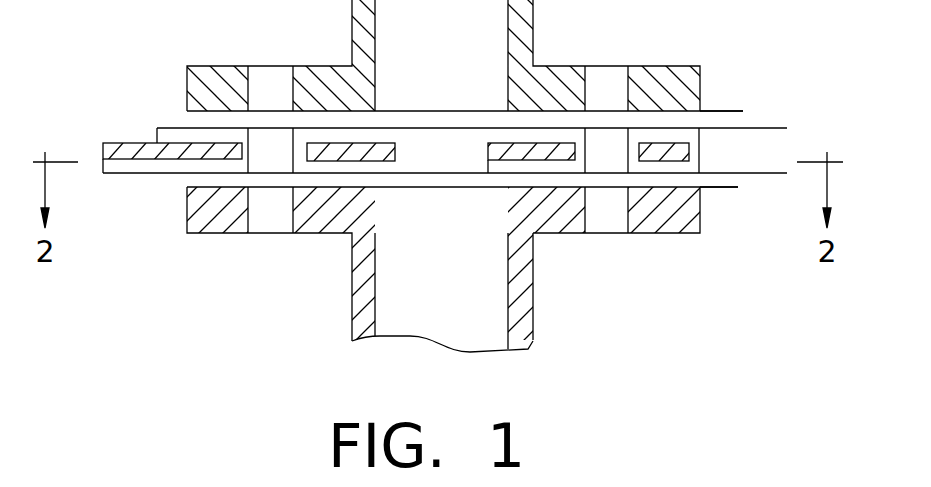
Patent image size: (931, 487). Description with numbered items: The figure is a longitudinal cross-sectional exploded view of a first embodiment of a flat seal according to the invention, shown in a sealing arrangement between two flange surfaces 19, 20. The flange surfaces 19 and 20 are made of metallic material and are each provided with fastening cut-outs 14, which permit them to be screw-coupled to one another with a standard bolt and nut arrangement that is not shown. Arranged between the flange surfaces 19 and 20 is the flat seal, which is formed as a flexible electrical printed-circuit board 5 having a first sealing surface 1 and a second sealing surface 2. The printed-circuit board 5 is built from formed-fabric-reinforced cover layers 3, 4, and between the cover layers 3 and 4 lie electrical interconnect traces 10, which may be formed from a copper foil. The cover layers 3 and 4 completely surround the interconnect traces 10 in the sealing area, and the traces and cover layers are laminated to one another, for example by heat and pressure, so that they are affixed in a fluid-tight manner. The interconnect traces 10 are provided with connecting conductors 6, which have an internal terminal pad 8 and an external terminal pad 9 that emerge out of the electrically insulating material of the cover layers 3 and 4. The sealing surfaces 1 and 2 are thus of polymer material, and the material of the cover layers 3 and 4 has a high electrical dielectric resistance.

The first sealing surface 1 is at (770, 128).
The second sealing surface 2 is at (773, 173).
The cover layer 3 is at (177, 132).
The cover layer 4 is at (167, 168).
The flexible electrical printed-circuit board 5 is at (712, 155).
The connecting conductors 6 is at (318, 156).
The internal terminal pad 8 is at (395, 154).
The external terminal pad 9 is at (123, 150).
The electrical interconnect traces 10 is at (517, 141).
The fastening cut-outs 14 is at (607, 72).
The flange surface 19 is at (720, 114).
The flange surface 20 is at (744, 186).